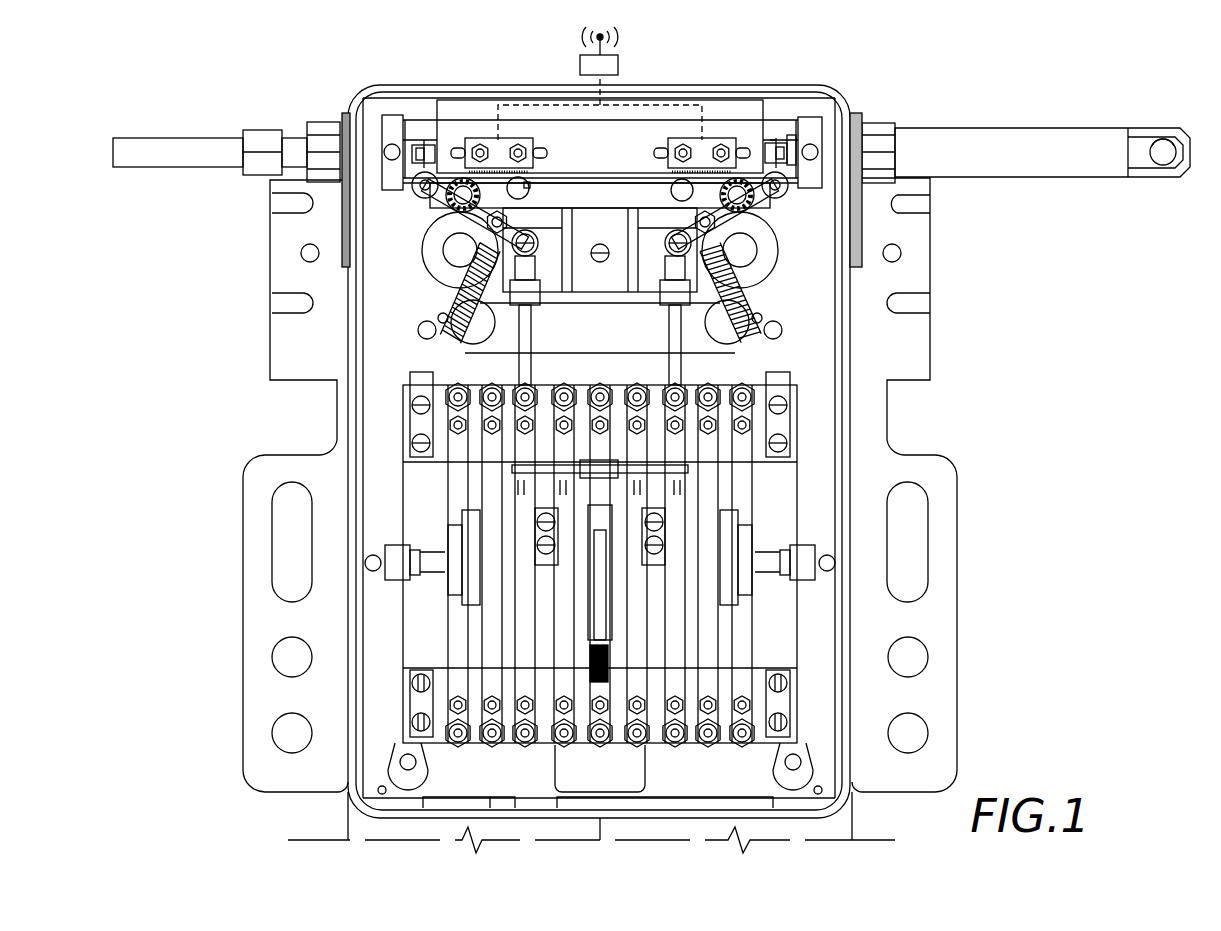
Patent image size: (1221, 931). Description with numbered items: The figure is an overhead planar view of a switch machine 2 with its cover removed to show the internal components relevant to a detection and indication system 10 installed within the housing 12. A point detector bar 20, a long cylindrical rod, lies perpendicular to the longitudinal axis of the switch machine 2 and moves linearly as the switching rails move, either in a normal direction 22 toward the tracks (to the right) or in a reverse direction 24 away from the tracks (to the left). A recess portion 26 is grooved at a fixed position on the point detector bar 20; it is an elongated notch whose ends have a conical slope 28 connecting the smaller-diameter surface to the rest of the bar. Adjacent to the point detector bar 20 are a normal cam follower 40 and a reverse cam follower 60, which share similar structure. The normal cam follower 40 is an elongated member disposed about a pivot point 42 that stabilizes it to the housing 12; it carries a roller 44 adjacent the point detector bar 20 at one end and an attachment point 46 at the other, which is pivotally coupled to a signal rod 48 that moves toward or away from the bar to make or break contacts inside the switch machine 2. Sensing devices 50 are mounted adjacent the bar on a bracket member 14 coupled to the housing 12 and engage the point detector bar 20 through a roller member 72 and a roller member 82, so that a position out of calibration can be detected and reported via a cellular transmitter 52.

The switch machine 2 is at (340, 86).
The detection and indication system 10 is at (583, 200).
The housing 12 is at (620, 86).
The bracket member 14 is at (452, 123).
The point detector bar 20 is at (905, 130).
The normal direction 22 is at (1046, 113).
The reverse direction 24 is at (158, 123).
The recess portion 26 is at (771, 128).
The conical slope 28 is at (789, 138).
The normal cam follower 40 is at (745, 224).
The pivot point 42 is at (748, 200).
The roller 44 is at (790, 190).
The attachment point 46 is at (668, 238).
The signal rod 48 is at (678, 352).
The sensing device 50 is at (428, 116).
The cellular transmitter 52 is at (580, 62).
The reverse cam follower 60 is at (445, 220).
The roller member 72 is at (789, 150).
The roller member 82 is at (420, 146).